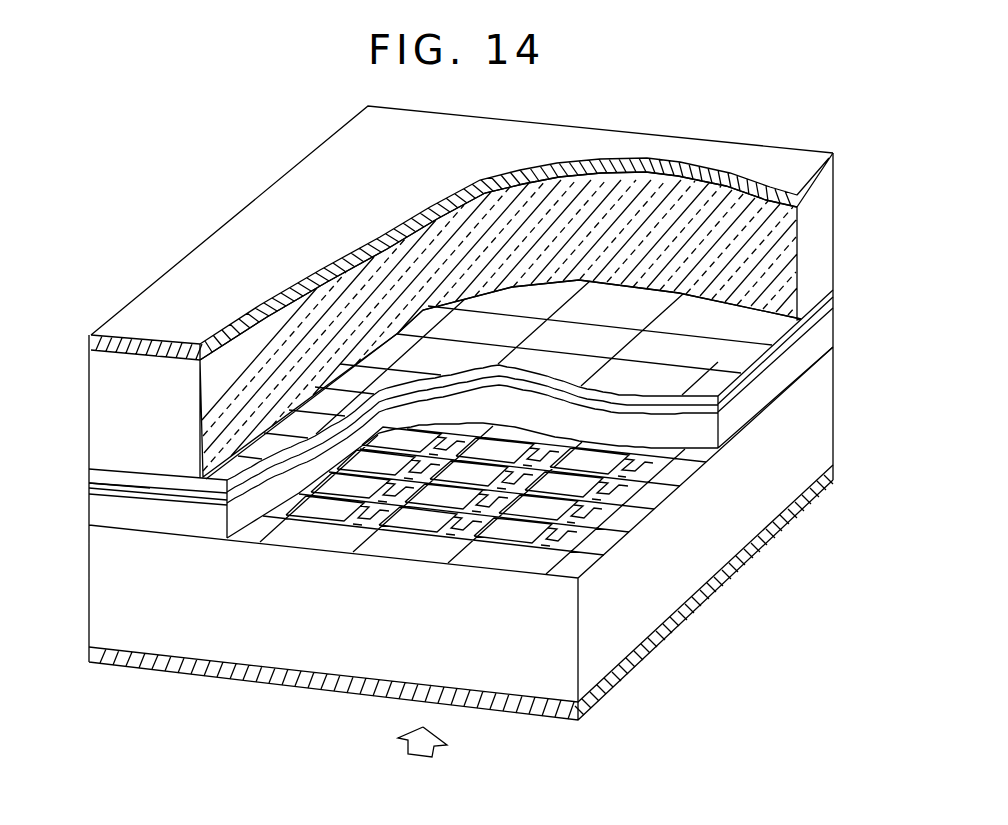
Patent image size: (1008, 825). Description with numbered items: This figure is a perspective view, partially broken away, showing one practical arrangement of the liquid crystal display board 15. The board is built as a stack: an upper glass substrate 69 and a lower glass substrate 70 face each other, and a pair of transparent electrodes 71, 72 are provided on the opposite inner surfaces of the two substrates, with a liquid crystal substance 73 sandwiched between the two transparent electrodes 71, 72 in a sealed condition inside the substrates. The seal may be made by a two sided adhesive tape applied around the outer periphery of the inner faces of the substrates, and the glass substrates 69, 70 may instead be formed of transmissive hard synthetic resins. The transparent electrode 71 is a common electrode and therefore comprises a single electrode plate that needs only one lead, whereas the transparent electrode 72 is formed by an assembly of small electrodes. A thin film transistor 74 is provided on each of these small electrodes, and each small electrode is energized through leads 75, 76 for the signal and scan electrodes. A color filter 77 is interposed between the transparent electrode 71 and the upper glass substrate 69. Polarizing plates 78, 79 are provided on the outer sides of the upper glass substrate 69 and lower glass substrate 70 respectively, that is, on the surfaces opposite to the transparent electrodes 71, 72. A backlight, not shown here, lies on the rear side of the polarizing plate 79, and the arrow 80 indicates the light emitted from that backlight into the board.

The liquid crystal display board 15 is at (837, 290).
The upper glass substrate 69 is at (823, 239).
The lower glass substrate 70 is at (818, 415).
The transparent electrode 71 is at (112, 497).
The transparent electrode 72 is at (510, 537).
The liquid crystal substance 73 is at (820, 335).
The thin film transistor 74 is at (573, 548).
The lead 75 is at (613, 520).
The lead 76 is at (603, 537).
The color filter 77 is at (423, 310).
The polarizing plate 78 is at (752, 152).
The polarizing plate 79 is at (795, 510).
The arrow 80 is at (418, 757).